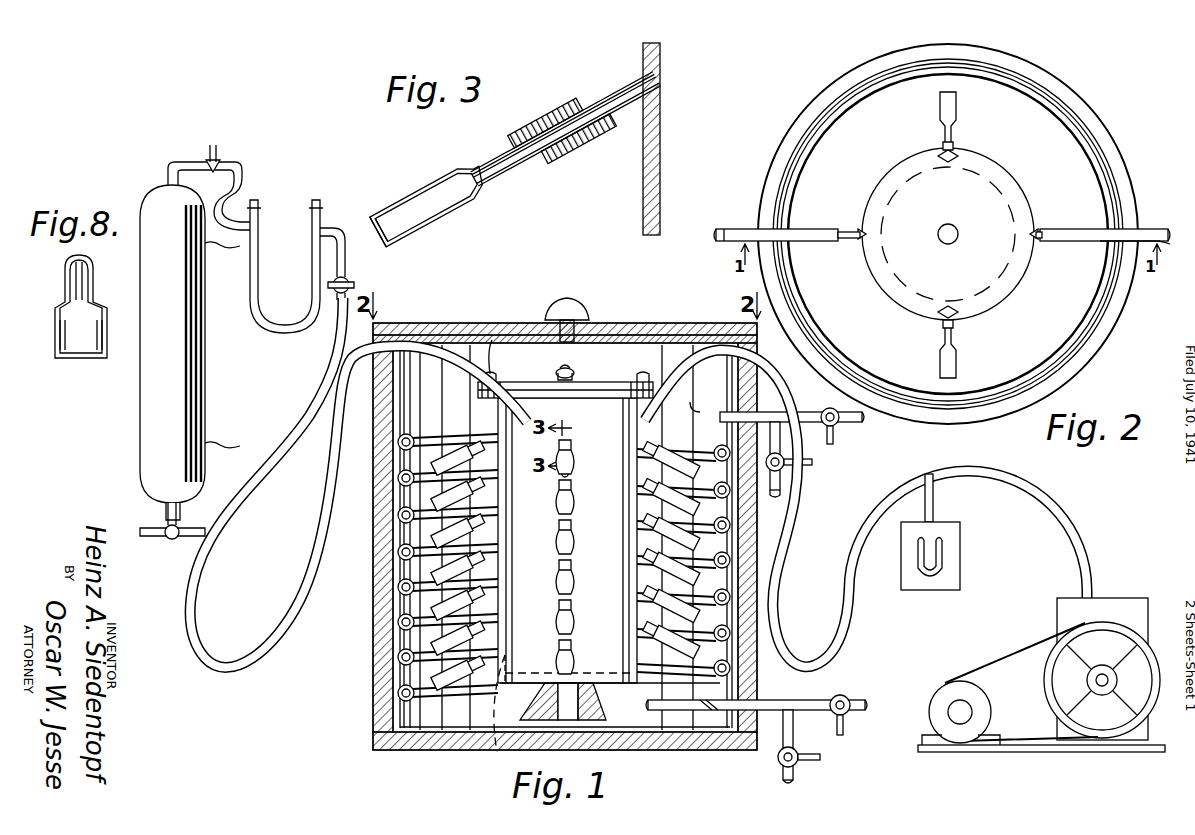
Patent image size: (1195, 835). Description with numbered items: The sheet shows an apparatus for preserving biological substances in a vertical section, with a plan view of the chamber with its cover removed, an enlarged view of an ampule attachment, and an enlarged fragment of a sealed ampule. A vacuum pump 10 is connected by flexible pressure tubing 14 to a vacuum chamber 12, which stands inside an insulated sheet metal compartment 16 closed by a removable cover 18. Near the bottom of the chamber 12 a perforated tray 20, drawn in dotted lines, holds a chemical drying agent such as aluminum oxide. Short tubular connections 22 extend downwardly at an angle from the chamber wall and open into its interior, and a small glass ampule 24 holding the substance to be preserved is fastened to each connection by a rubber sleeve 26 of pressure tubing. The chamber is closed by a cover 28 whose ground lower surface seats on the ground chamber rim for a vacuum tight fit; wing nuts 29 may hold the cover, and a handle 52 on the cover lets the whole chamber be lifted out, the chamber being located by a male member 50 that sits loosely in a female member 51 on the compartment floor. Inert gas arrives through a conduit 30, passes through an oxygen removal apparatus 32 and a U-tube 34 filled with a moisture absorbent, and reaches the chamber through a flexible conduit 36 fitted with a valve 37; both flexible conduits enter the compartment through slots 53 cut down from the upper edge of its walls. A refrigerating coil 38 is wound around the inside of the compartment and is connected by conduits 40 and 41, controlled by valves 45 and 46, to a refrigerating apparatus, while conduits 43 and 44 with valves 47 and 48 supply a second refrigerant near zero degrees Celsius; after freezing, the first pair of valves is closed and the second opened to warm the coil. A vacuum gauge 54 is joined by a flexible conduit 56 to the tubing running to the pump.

In FIG. 1, the vacuum pump 10 is at (1052, 614).
In FIG. 1, the vacuum chamber 12 is at (548, 531).
In FIG. 1, the flexible pressure tubing 14 is at (1065, 522).
In FIG. 2, the flexible pressure tubing 14 is at (1086, 230).
In FIG. 1, the compartment 16 is at (373, 598).
In FIG. 2, the compartment 16 is at (1105, 138).
In FIG. 1, the removable cover 18 is at (694, 334).
In FIG. 1, the tray 20 is at (490, 756).
In FIG. 1, the tubular connections 22 is at (494, 555).
In FIG. 3, the tubular connections 22 is at (620, 90).
In FIG. 1, the glass ampule 24 is at (399, 474).
In FIG. 3, the glass ampule 24 is at (458, 214).
In FIG. 8, the glass ampule 24 is at (93, 282).
In FIG. 1, the rubber sleeve 26 is at (480, 585).
In FIG. 3, the rubber sleeve 26 is at (582, 148).
In FIG. 1, the cover 28 is at (641, 378).
In FIG. 2, the cover 28 is at (1005, 175).
In FIG. 1, the wing nuts 29 is at (492, 340).
In FIG. 2, the wing nuts 29 is at (942, 168).
In FIG. 1, the conduit 30 is at (168, 538).
In FIG. 1, the oxygen removal apparatus 32 is at (236, 338).
In FIG. 1, the U-tube 34 is at (270, 228).
In FIG. 1, the flexible conduit 36 is at (237, 503).
In FIG. 2, the flexible conduit 36 is at (750, 228).
In FIG. 1, the valve 37 is at (352, 284).
In FIG. 1, the refrigerating coil 38 is at (726, 410).
In FIG. 2, the refrigerating coil 38 is at (1098, 316).
In FIG. 1, the conduit 40 is at (850, 426).
In FIG. 1, the conduit 41 is at (858, 697).
In FIG. 1, the conduit 43 is at (775, 496).
In FIG. 1, the conduit 44 is at (800, 778).
In FIG. 1, the valve 45 is at (833, 444).
In FIG. 1, the valve 46 is at (840, 695).
In FIG. 1, the valve 47 is at (789, 473).
In FIG. 1, the valve 48 is at (795, 750).
In FIG. 1, the male member 50 is at (575, 722).
In FIG. 1, the female member 51 is at (598, 722).
In FIG. 1, the handle 52 is at (568, 368).
In FIG. 2, the handle 52 is at (956, 243).
In FIG. 1, the slots 53 is at (373, 339).
In FIG. 2, the slots 53 is at (1130, 228).
In FIG. 1, the vacuum gauge 54 is at (952, 556).
In FIG. 1, the flexible conduit 56 is at (940, 510).